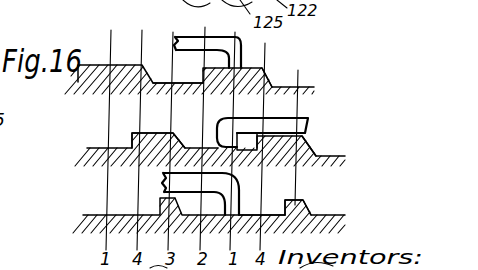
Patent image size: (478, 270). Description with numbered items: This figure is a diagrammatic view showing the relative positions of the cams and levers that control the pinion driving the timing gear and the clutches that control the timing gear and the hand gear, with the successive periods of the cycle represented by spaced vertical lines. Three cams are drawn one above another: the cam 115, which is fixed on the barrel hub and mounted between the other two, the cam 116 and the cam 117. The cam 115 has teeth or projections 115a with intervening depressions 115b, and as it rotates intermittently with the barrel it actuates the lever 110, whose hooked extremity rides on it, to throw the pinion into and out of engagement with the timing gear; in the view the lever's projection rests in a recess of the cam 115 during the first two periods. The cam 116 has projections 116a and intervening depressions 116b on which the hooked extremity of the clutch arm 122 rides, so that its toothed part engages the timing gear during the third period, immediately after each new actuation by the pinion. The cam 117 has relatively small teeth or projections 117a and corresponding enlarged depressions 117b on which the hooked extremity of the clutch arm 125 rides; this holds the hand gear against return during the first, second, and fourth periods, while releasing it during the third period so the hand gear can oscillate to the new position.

The lever 110 is at (305, 123).
The cam 115 is at (100, 148).
The teeth or projections 115a is at (307, 143).
The depressions 115b is at (119, 148).
The cam 116 is at (83, 88).
The projections 116a is at (300, 70).
The depressions 116b is at (165, 83).
The cam 117 is at (83, 219).
The teeth or projections 117a is at (307, 204).
The depressions 117b is at (268, 215).
The clutch arm 122 is at (192, 43).
The clutch arm 125 is at (158, 177).